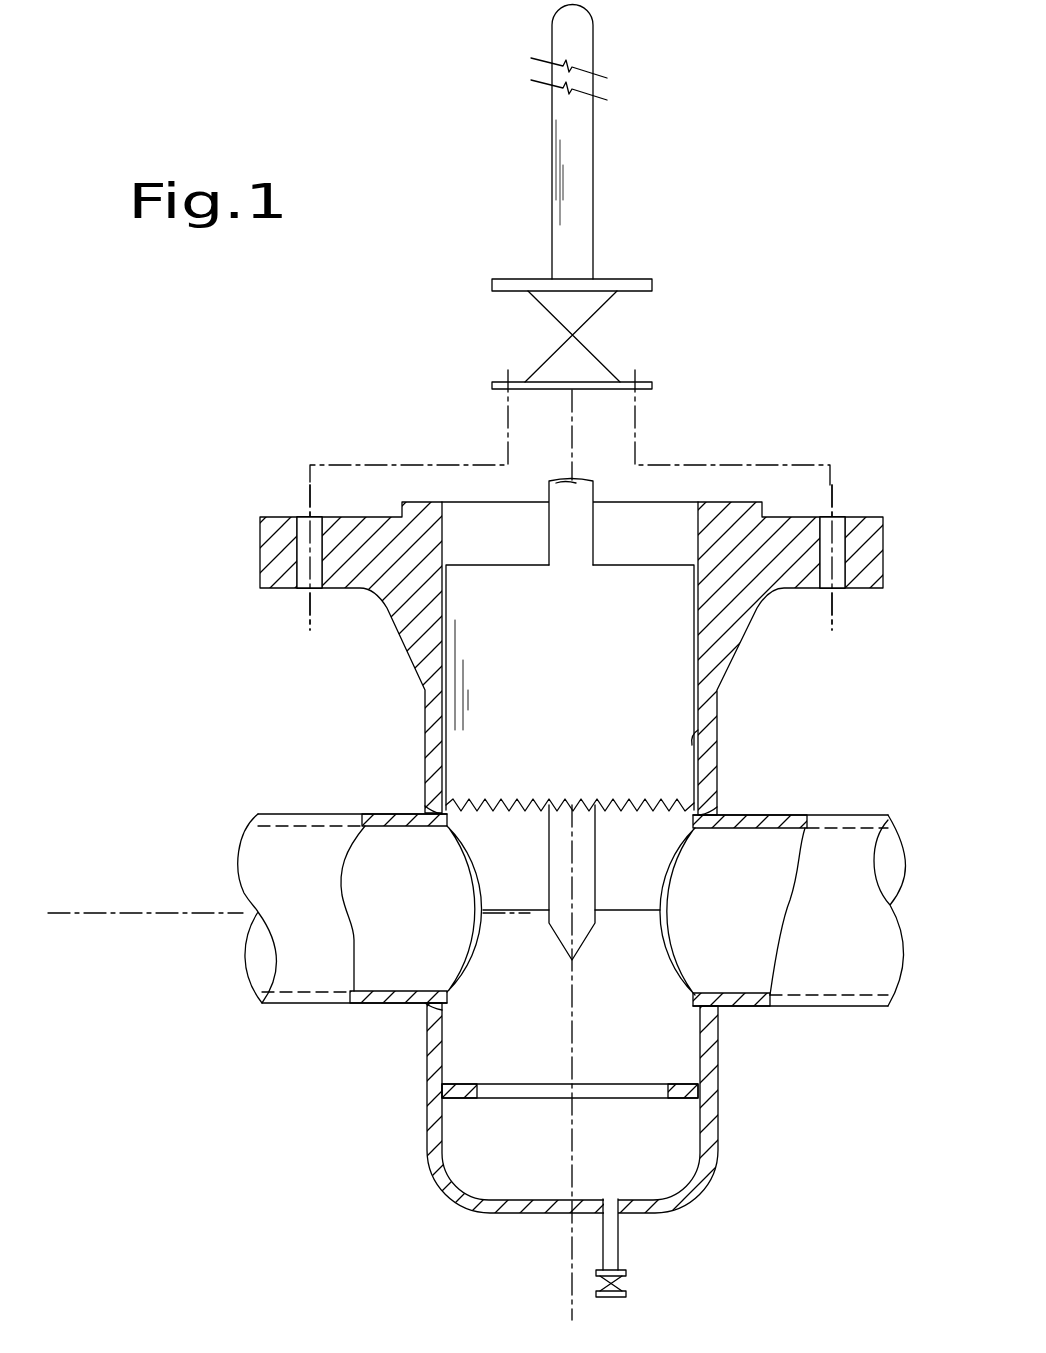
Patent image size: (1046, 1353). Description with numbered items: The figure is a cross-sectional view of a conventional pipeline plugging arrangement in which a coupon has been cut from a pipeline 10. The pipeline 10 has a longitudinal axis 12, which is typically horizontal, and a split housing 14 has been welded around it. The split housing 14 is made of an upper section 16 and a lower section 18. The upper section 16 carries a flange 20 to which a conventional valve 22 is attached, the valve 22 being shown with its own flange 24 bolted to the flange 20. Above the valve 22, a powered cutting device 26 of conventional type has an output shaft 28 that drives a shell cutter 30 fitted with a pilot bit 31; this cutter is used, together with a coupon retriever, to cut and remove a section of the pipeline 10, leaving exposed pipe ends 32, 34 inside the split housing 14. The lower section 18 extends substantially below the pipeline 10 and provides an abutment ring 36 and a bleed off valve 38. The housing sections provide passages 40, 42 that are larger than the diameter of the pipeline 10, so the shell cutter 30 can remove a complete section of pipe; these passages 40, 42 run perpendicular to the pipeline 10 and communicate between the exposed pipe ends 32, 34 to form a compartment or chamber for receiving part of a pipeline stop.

The pipeline 10 is at (275, 814).
The longitudinal axis 12 is at (160, 913).
The split housing 14 is at (402, 708).
The upper section 16 is at (732, 704).
The lower section 18 is at (732, 1061).
The flange 20 is at (292, 517).
The valve 22 is at (540, 307).
The flange 24 is at (523, 390).
The powered cutting device 26 is at (603, 147).
The output shaft 28 is at (585, 520).
The shell cutter 30 is at (530, 646).
The pilot bit 31 is at (547, 920).
The exposed pipe end 32 is at (470, 820).
The exposed pipe end 34 is at (655, 945).
The abutment ring 36 is at (468, 1098).
The bleed off valve 38 is at (627, 1275).
The passage 40 is at (452, 1052).
The passage 42 is at (694, 730).